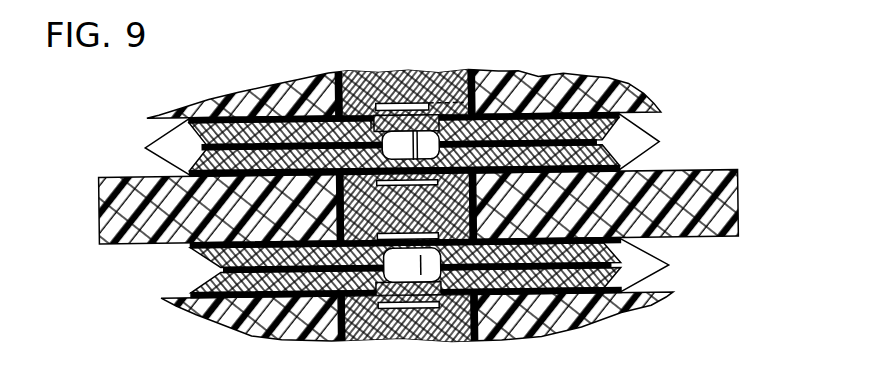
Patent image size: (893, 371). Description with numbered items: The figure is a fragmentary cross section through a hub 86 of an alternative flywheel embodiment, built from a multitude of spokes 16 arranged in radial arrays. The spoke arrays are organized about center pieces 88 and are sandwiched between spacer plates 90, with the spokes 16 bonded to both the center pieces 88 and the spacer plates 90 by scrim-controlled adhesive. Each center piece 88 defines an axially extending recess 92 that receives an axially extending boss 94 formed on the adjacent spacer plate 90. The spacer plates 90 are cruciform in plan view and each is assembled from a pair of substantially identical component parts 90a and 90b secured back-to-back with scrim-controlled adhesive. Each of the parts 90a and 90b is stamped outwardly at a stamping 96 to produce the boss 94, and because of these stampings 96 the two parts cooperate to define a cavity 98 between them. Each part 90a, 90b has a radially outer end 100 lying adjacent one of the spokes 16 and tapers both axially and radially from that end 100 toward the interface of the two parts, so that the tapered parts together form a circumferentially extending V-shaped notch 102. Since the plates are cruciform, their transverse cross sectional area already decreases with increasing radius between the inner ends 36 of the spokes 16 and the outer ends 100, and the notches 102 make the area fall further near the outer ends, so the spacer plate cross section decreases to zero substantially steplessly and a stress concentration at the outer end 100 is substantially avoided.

The spokes 16 is at (212, 95).
The inner ends 36 is at (338, 71).
The hub 86 is at (697, 52).
The center pieces 88 is at (432, 80).
The spacer plates 90 is at (514, 118).
The component part 90a is at (572, 118).
The component part 90b is at (615, 168).
The recess 92 is at (432, 103).
The bosses 94 is at (386, 131).
The stampings 96 is at (372, 112).
The cavity 98 is at (420, 268).
The radially outer end 100 is at (146, 144).
The V-shaped notch 102 is at (207, 148).